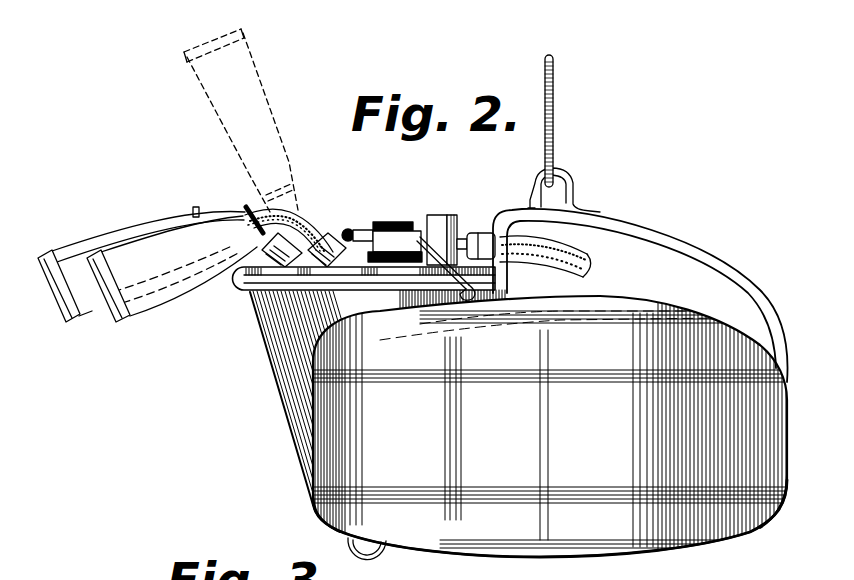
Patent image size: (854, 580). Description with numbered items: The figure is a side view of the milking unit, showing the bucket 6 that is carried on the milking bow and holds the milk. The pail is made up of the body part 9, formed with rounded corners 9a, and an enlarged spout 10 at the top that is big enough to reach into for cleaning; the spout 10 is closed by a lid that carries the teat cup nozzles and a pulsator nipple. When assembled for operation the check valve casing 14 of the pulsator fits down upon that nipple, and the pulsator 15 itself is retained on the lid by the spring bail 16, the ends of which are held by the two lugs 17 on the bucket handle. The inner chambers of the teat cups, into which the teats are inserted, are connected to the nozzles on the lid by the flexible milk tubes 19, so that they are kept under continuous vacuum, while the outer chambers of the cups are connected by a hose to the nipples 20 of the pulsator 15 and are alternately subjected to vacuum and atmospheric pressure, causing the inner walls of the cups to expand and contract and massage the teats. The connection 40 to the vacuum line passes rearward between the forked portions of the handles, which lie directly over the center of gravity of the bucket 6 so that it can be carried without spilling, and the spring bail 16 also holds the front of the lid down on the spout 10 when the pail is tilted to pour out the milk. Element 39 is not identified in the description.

The bucket 6 is at (550, 427).
The body part 9 is at (487, 510).
The rounded corners 9a is at (317, 505).
The enlarged spout 10 is at (287, 417).
The check valve casing 14 is at (453, 217).
The pulsator 15 is at (398, 222).
The spring bail 16 is at (430, 219).
The lugs 17 is at (488, 288).
The flexible milk tubes 19 is at (302, 225).
The nipples 20 is at (350, 229).
The hose nipple 39 is at (465, 234).
The connection to the vacuum line 40 is at (592, 261).